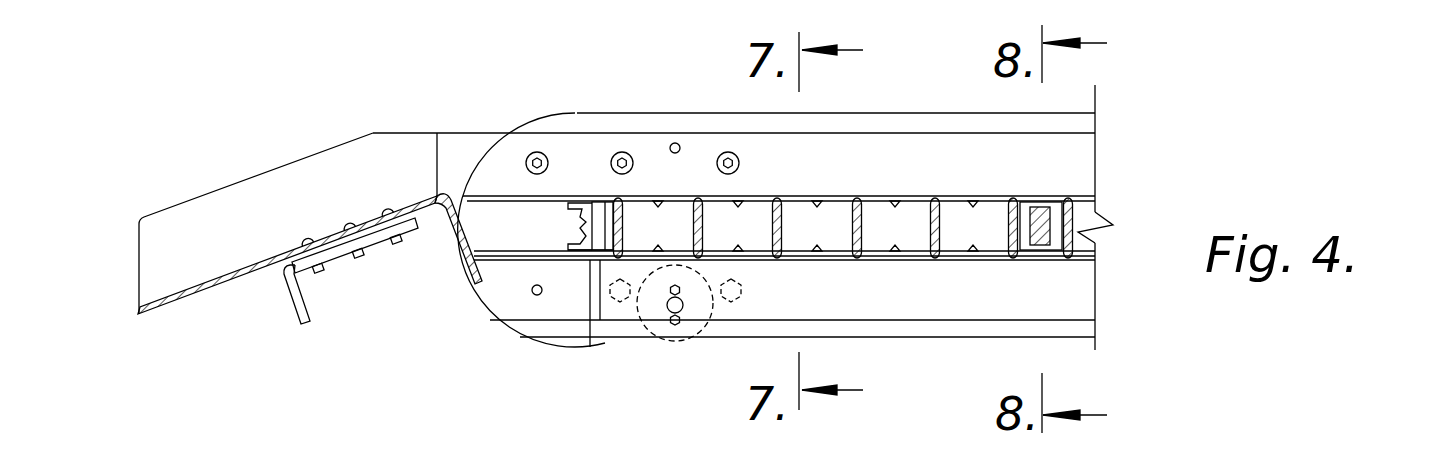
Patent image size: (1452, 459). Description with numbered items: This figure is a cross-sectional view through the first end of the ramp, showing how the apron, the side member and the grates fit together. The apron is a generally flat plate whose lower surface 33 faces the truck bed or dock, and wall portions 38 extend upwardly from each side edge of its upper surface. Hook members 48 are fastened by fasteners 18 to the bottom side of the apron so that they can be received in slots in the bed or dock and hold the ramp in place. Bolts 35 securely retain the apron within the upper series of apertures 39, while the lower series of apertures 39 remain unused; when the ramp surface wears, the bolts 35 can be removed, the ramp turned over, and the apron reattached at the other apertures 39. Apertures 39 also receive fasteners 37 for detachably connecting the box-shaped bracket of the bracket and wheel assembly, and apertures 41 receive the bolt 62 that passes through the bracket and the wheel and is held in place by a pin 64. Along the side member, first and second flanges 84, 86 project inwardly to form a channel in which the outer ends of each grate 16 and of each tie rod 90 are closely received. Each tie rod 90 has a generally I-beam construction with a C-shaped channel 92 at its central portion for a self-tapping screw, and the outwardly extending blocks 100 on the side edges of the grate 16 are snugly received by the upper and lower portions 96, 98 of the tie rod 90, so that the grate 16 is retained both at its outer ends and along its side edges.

The grate 16 is at (910, 198).
The fasteners 18 is at (343, 223).
The lower surface 33 is at (187, 300).
The bolts 35 is at (537, 163).
The fasteners 37 is at (742, 290).
The wall portions 38 is at (248, 197).
The apertures 39 is at (537, 295).
The apertures 41 is at (680, 148).
The hook members 48 is at (300, 323).
The bolt 62 is at (677, 307).
The pin 64 is at (672, 292).
The first flange 84 is at (483, 193).
The second flange 86 is at (503, 262).
The tie rod 90 is at (582, 262).
The C-shaped channel 92 is at (601, 210).
The upper portion 96 is at (613, 200).
The lower portion 98 is at (601, 210).
The outwardly extending blocks 100 is at (607, 228).